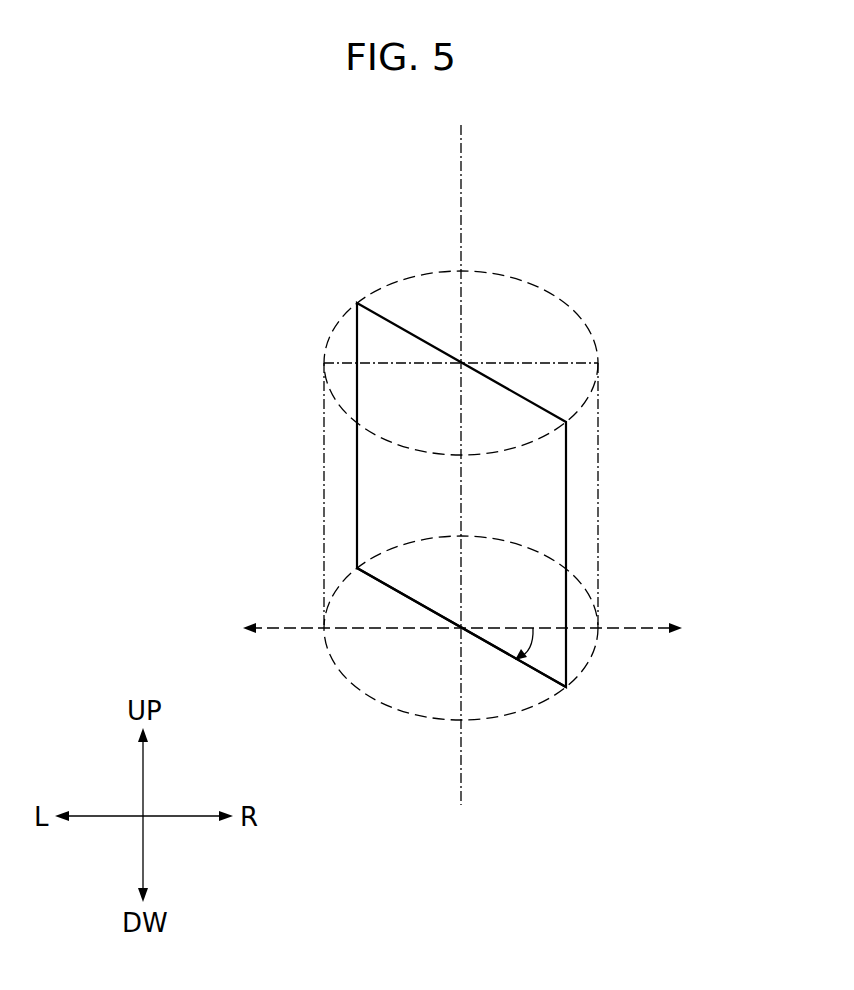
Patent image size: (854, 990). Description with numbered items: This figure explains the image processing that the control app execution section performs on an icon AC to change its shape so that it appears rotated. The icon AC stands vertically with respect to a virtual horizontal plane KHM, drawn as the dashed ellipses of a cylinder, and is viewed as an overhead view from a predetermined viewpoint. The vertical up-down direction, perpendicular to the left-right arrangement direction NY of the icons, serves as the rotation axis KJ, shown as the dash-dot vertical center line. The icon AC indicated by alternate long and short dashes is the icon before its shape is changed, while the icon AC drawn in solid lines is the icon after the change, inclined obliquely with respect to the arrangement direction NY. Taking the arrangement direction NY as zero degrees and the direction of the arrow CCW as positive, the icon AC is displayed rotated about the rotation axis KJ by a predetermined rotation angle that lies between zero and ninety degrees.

The rotation axis KJ is at (463, 205).
The icon AC is at (398, 322).
The arrangement direction NY is at (640, 630).
The virtual horizontal plane KHM is at (540, 705).
The arrow indicating positive rotation direction CCW is at (502, 652).